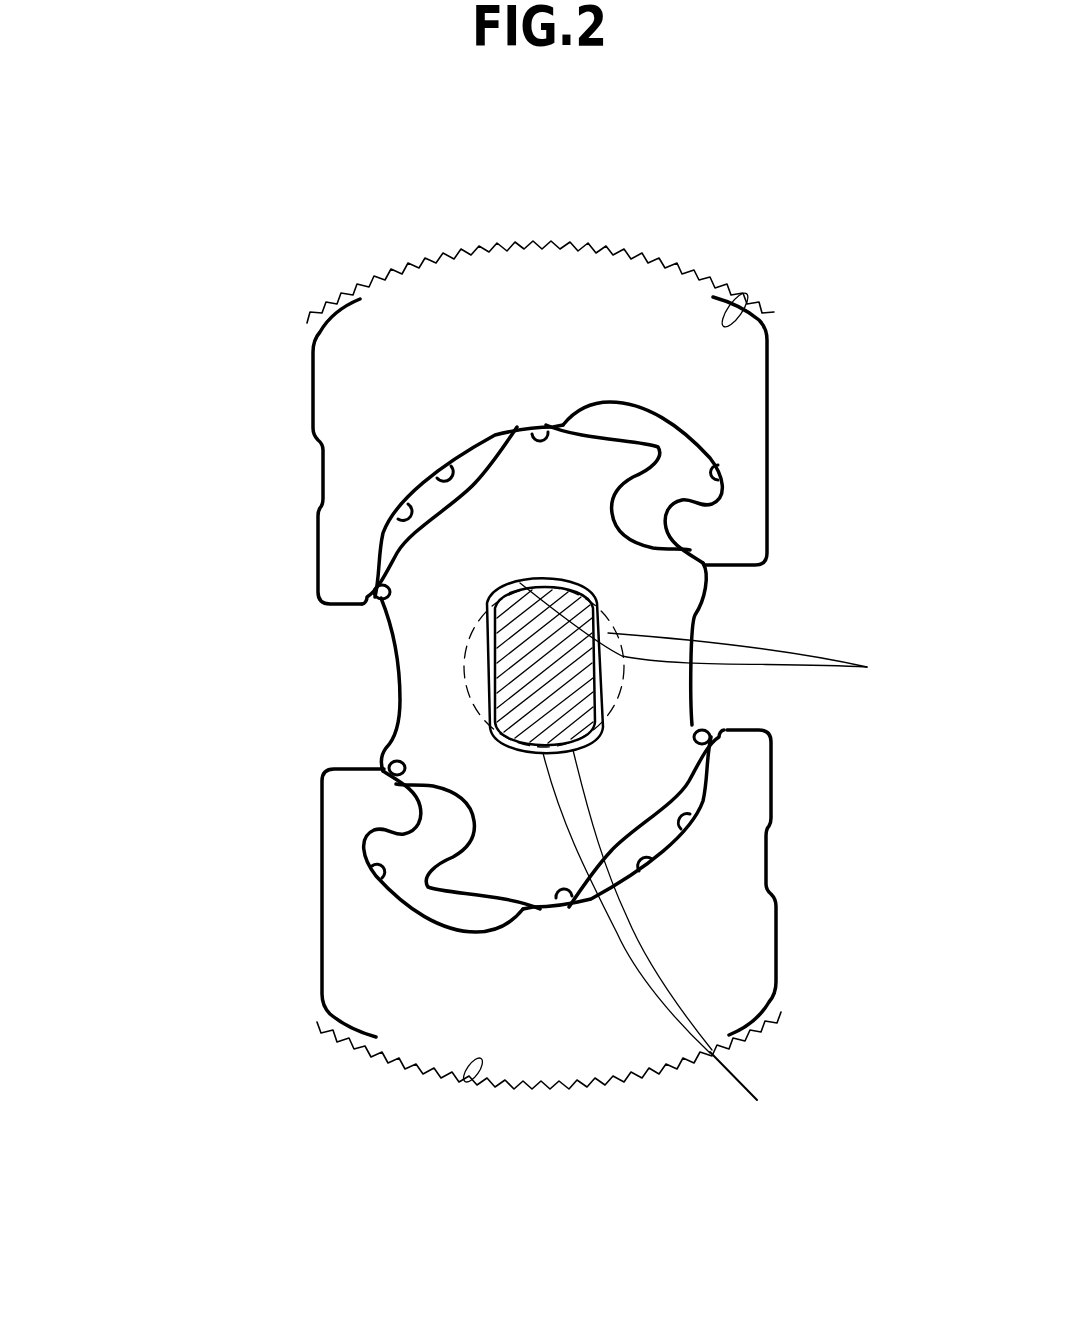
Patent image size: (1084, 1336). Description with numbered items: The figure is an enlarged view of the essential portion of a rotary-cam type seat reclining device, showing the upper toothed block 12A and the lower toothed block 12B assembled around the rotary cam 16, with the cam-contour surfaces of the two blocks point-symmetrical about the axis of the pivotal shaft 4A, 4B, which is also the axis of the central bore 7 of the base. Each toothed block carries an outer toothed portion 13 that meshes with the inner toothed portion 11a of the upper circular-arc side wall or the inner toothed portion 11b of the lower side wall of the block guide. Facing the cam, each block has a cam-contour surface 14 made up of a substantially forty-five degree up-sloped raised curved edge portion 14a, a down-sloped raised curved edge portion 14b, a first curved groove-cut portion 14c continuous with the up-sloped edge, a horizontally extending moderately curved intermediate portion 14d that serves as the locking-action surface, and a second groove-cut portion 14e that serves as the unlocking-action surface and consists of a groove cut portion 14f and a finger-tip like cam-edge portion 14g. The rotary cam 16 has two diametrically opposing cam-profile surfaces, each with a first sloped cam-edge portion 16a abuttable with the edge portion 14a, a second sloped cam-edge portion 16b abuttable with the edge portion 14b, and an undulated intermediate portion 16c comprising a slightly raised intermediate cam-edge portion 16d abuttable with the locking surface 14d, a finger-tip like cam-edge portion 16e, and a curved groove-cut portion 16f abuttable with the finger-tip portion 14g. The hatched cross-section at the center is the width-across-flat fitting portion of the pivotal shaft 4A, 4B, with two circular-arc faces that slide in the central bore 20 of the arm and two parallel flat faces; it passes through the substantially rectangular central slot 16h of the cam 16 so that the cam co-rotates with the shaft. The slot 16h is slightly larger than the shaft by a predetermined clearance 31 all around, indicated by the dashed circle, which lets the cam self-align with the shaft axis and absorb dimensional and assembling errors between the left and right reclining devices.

The upper toothed block 12A is at (335, 378).
The lower toothed block 12B is at (348, 988).
The cam-contour surface 14 is at (457, 455).
The up-sloped raised curved edge portion 14a is at (375, 598).
The down-sloped raised curved edge portion 14b is at (700, 588).
The first curved groove-cut portion 14c is at (394, 515).
The locking-action cam-contour surface portion 14d is at (550, 420).
The unlocking-action cam-contour surface portion 14e is at (857, 398).
The groove cut portion 14f is at (727, 482).
The finger-tip like cam-edge portion 14g is at (683, 523).
The rotary cam 16 is at (538, 680).
The first sloped cam-edge portion 16a is at (379, 579).
The second sloped cam-edge portion 16b is at (690, 558).
The undulated intermediate portion 16c is at (577, 462).
The intermediate cam-edge portion 16d is at (520, 428).
The finger-tip like cam-edge portion 16e is at (618, 462).
The curved groove-cut portion 16f is at (662, 446).
The central slot 16h is at (603, 617).
The outer toothed portion 13 is at (615, 252).
The inner toothed portion 11a is at (743, 313).
The inner toothed portion 11b is at (470, 1060).
The outside pivotal shaft 4A is at (394, 665).
The inside pivotal shaft 4B is at (510, 663).
The central bore 20 is at (415, 667).
The central bore 7 is at (470, 687).
The clearance 31 is at (714, 853).